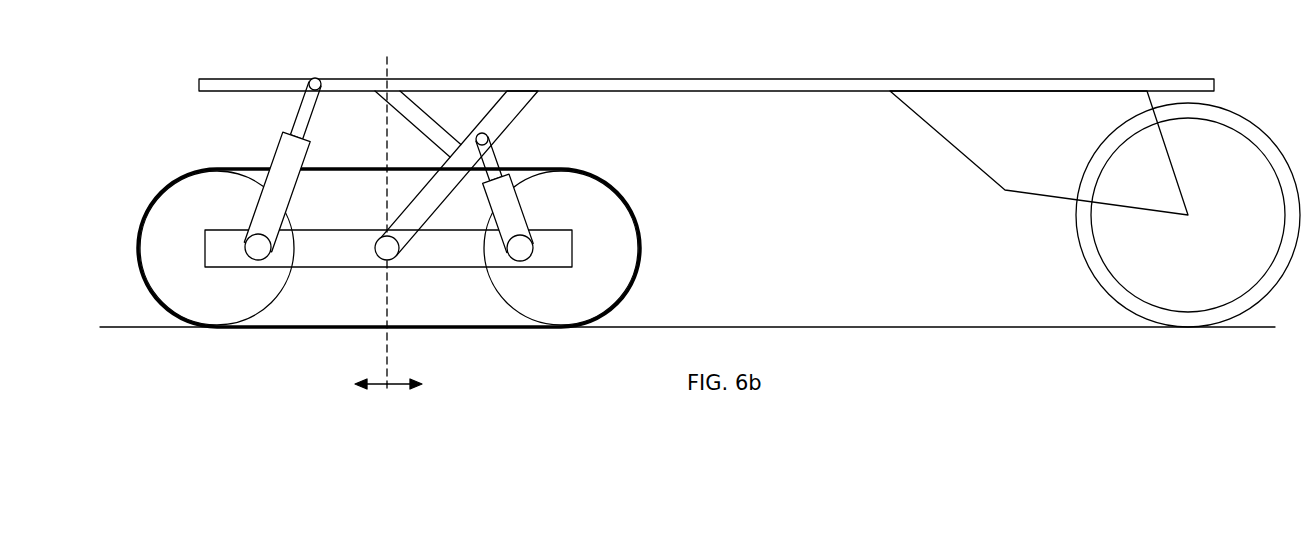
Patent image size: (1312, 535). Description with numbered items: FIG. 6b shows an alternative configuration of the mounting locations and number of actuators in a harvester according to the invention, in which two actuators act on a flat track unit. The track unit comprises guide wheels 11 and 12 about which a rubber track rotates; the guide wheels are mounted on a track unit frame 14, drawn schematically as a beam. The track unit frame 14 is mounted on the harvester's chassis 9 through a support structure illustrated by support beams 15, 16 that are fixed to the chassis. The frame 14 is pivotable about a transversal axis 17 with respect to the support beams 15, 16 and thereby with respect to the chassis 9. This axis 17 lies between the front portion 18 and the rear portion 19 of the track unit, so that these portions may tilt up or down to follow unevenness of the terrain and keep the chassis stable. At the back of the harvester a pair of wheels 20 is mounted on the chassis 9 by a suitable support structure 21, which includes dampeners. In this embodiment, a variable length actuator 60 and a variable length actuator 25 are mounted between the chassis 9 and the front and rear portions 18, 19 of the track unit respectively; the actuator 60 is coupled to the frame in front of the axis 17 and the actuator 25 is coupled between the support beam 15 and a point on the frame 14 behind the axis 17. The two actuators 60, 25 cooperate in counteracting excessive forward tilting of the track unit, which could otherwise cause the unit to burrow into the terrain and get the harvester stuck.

The chassis 9 is at (777, 80).
The guide wheel 11 is at (160, 260).
The guide wheel 12 is at (623, 268).
The track unit frame 14 is at (342, 245).
The support beam 15 is at (507, 110).
The support beam 16 is at (425, 120).
The transversal axis 17 is at (392, 254).
The front portion 18 is at (358, 373).
The rear portion 19 is at (416, 373).
The wheels 20 is at (1128, 260).
The support structure 21 is at (1167, 160).
The variable length actuator 25 is at (507, 205).
The variable length actuator 60 is at (283, 197).